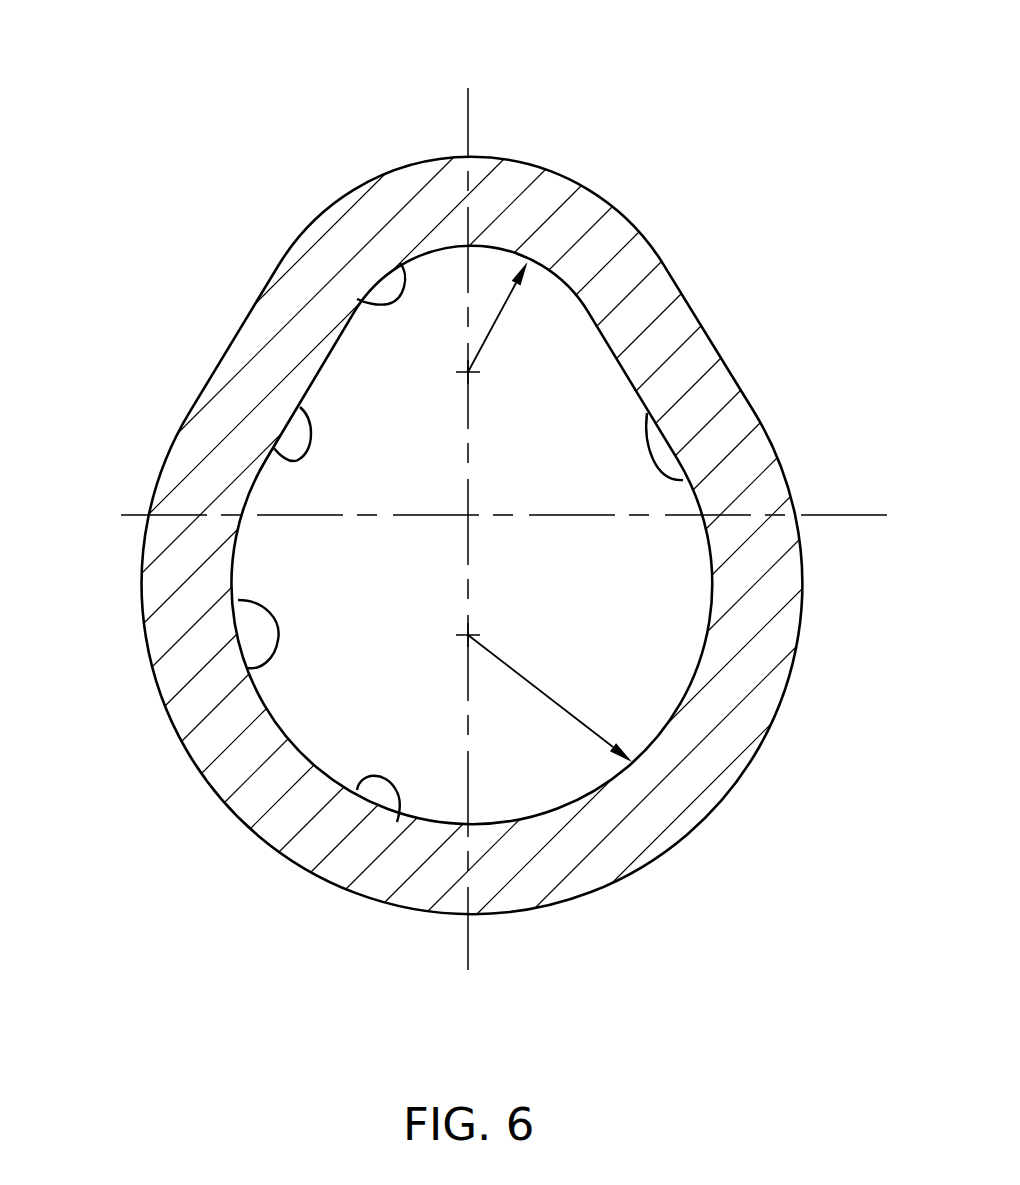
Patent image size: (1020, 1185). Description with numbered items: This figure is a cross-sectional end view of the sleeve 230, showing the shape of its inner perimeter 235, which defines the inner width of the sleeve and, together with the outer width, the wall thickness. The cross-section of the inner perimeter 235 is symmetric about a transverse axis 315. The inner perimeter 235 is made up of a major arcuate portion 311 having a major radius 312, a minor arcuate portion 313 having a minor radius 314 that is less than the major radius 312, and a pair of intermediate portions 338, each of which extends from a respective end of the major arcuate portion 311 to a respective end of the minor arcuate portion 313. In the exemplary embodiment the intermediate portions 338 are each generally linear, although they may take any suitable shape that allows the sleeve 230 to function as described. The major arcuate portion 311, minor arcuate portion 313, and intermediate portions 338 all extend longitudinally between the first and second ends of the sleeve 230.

The sleeve 230 is at (666, 142).
The minor arcuate portion 313 is at (357, 298).
The intermediate portions 338 is at (277, 447).
The inner perimeter 235 is at (238, 600).
The major arcuate portion 311 is at (397, 822).
The transverse axis 315 is at (468, 113).
The minor radius 314 is at (493, 328).
The major radius 312 is at (527, 681).